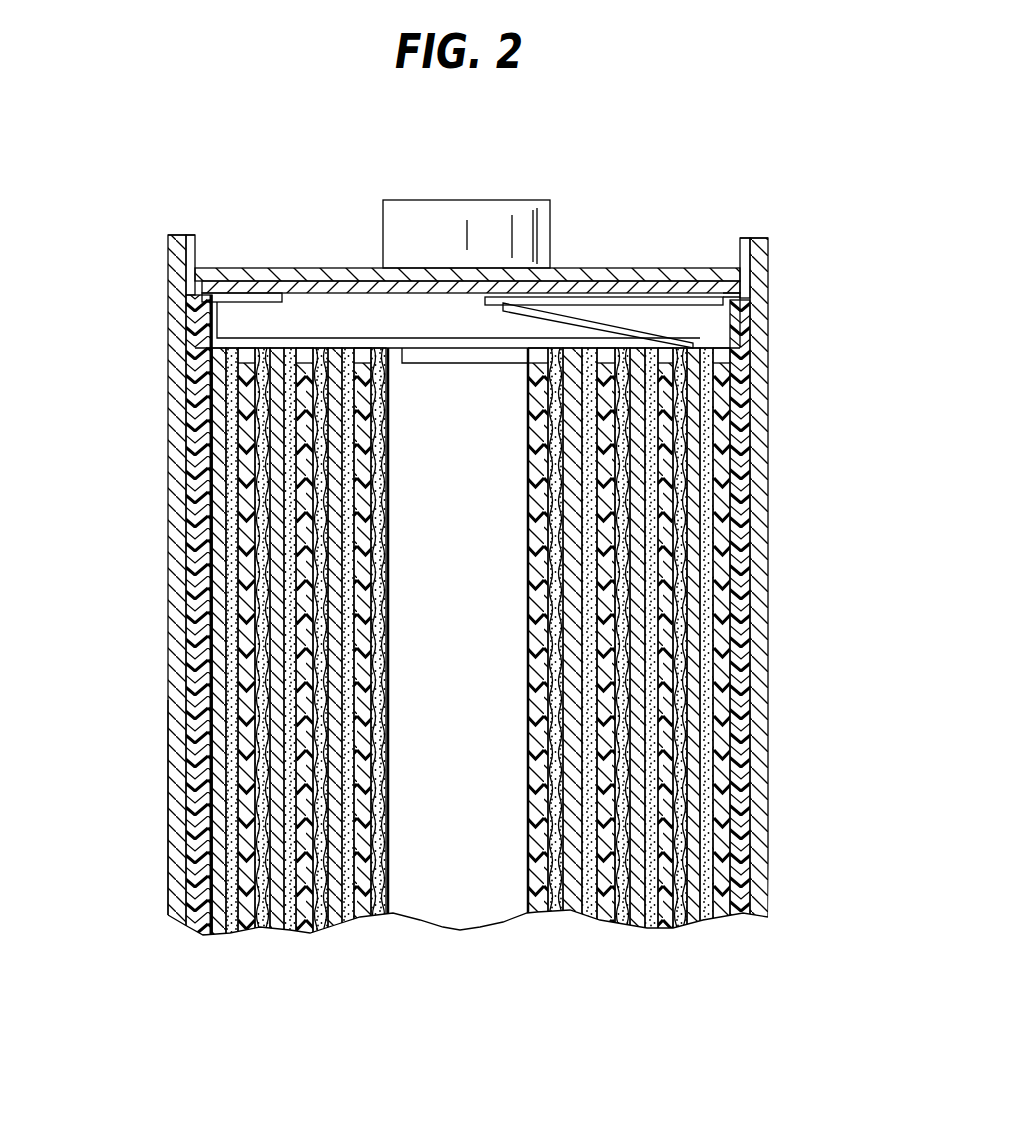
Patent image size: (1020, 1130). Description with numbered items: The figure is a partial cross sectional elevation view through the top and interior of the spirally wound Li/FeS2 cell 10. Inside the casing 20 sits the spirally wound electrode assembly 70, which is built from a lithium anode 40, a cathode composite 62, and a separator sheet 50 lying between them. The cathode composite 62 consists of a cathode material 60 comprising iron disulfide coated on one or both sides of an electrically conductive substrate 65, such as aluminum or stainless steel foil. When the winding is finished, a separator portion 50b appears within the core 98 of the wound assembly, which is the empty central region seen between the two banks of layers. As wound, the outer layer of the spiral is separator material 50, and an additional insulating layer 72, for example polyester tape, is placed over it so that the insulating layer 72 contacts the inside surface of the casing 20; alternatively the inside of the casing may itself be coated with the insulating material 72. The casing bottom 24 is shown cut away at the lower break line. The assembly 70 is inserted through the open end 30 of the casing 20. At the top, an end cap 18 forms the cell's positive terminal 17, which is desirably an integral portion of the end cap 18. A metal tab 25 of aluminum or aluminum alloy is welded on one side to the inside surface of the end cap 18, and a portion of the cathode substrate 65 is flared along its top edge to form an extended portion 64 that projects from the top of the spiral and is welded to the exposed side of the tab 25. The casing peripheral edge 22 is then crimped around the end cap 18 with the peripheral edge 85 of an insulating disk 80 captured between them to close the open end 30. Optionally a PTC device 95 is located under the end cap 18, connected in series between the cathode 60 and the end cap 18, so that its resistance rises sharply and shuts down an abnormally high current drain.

The wound cell 10 is at (778, 352).
The positive terminal 17 is at (472, 200).
The end cap 18 is at (312, 267).
The casing 20 is at (167, 338).
The casing peripheral edge 22 is at (167, 248).
The case bottom wall 24 is at (167, 826).
The metal tab 25 is at (643, 330).
The open end 30 is at (200, 264).
The lithium anode 40 is at (221, 495).
The separator sheet 50 is at (240, 563).
The separator portion 50b is at (530, 895).
The cathode material 60 is at (693, 625).
The cathode composite 62 is at (246, 658).
The extended portion 64 is at (687, 357).
The substrate 65 is at (680, 647).
The spirally wound electrode assembly 70 is at (213, 788).
The insulating layer 72 is at (194, 441).
The insulating disk 80 is at (753, 287).
The peripheral edge of insulating disk 85 is at (195, 263).
The PTC device 95 is at (640, 300).
The core 98 is at (440, 913).